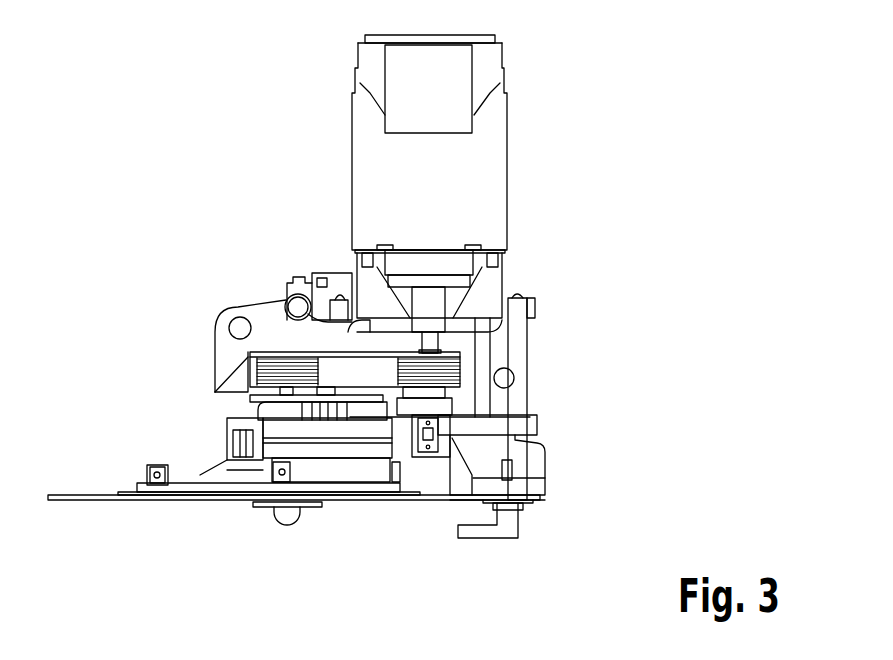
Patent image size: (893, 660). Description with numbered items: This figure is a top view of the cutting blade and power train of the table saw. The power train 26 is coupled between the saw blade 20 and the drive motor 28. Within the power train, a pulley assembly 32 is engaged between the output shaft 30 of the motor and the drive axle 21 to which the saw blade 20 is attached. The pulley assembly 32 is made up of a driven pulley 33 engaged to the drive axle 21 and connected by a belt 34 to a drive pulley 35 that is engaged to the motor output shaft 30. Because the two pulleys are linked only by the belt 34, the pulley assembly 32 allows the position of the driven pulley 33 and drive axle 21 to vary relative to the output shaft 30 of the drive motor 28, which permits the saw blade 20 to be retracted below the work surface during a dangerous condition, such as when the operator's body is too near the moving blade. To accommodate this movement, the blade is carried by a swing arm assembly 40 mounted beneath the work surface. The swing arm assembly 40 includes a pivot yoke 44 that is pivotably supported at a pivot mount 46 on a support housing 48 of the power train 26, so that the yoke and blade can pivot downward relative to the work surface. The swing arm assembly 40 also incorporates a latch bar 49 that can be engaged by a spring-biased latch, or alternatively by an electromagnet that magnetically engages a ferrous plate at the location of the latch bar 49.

The saw blade 20 is at (88, 498).
The drive axle 21 is at (303, 508).
The power train 26 is at (553, 378).
The drive motor 28 is at (485, 192).
The output shaft 30 is at (438, 353).
The pulley assembly 32 is at (257, 375).
The driven pulley 33 is at (269, 362).
The belt 34 is at (330, 370).
The drive pulley 35 is at (458, 382).
The swing arm assembly 40 is at (220, 416).
The pivot yoke 44 is at (435, 468).
The pivot mount 46 is at (437, 435).
The support housing 48 is at (522, 360).
The latch bar 49 is at (237, 448).